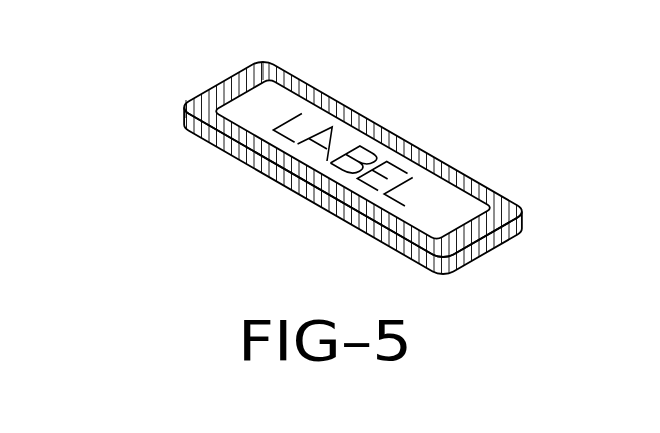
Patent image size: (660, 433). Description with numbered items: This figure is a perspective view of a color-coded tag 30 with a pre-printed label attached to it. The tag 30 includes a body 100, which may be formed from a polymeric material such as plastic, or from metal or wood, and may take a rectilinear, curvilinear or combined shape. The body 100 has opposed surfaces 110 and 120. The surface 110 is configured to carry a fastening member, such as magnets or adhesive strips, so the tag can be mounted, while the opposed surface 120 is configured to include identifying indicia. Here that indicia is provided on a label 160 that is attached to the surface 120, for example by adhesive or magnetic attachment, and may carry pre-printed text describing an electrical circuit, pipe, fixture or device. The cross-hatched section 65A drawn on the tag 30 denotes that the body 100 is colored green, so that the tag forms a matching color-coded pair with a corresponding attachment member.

The tag 30 is at (270, 214).
The body 100 is at (522, 223).
The surface 110 is at (483, 252).
The opposed surface 120 is at (405, 148).
The label 160 is at (312, 120).
The cross-hatched section 65A is at (222, 88).